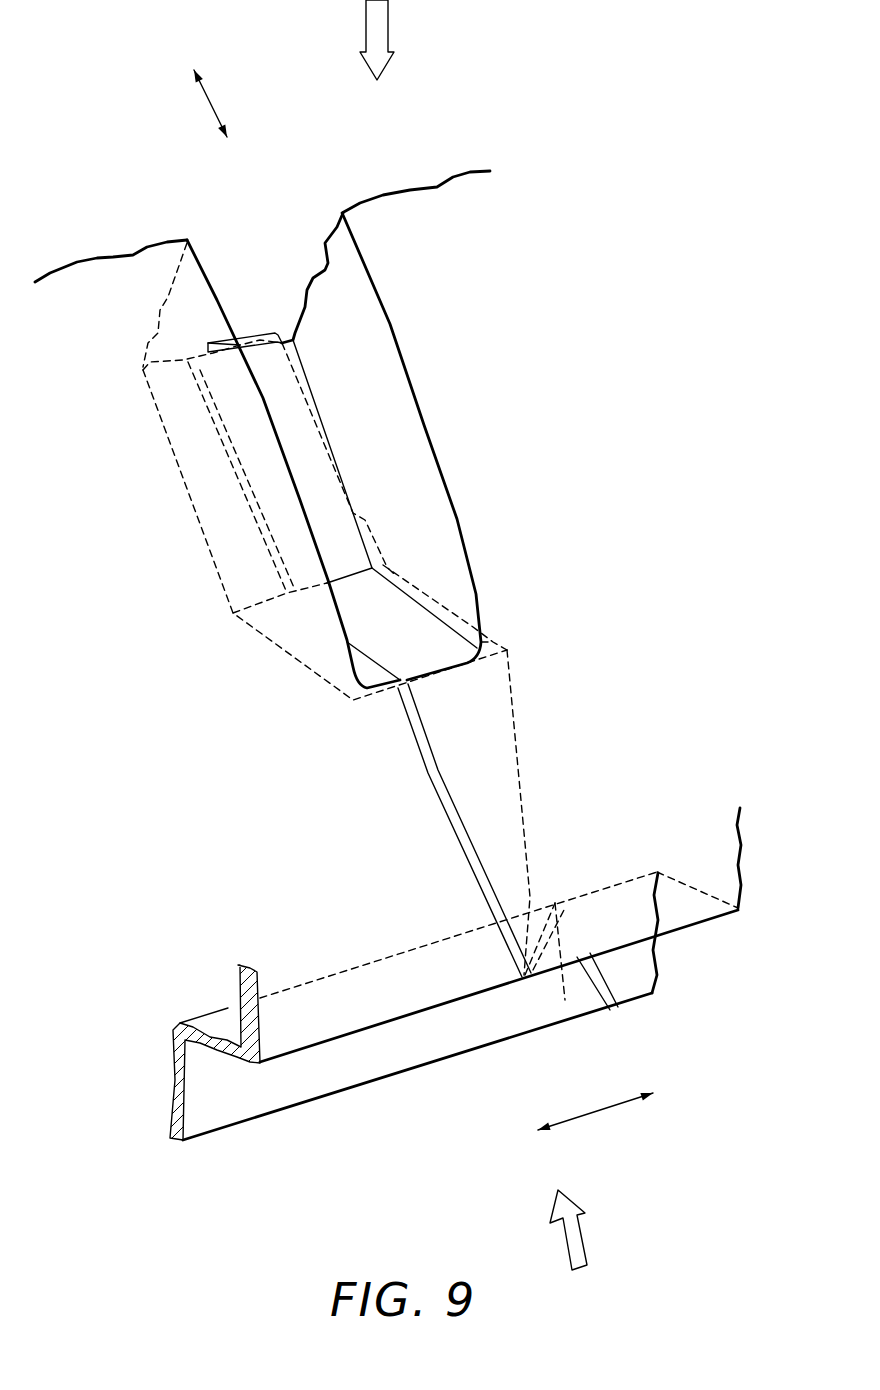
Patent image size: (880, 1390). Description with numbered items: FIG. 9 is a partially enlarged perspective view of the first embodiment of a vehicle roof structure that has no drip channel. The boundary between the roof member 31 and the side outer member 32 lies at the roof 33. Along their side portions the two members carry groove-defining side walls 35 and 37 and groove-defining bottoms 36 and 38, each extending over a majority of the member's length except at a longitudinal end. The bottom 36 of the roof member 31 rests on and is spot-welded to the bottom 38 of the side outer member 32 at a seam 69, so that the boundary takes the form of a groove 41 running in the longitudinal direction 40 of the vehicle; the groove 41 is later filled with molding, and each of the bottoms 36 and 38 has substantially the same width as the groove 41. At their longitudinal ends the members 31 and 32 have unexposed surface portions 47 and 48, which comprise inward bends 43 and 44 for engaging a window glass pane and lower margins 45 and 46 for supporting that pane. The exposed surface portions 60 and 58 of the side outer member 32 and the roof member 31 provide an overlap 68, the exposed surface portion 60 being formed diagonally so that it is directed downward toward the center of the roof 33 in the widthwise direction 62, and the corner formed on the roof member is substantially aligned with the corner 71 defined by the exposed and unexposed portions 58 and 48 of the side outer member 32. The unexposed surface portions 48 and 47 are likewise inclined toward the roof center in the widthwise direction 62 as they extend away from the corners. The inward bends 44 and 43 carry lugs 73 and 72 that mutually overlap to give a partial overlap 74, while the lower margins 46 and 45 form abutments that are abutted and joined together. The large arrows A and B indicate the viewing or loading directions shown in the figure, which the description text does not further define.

The roof member 31 is at (418, 203).
The side outer member 32 is at (110, 274).
The roof 33 is at (582, 339).
The groove-defining side wall 35 is at (333, 275).
The groove-defining bottom 36 is at (272, 352).
The groove-defining side wall 37 is at (168, 323).
The groove-defining bottom 38 is at (250, 340).
The longitudinal direction 40 is at (210, 104).
The groove 41 is at (228, 236).
The inward bend 43 is at (692, 910).
The inward bend 44 is at (232, 1030).
The lower margin 45 is at (647, 965).
The lower margin 46 is at (265, 1092).
The unexposed surface portion 47 is at (780, 940).
The unexposed surface portion 48 is at (307, 1180).
The exposed surface portion 58 is at (377, 887).
The exposed surface portion 60 is at (660, 798).
The widthwise direction 62 is at (595, 1113).
The overlap 68 is at (510, 773).
The seam 69 is at (428, 773).
The corner 71 is at (522, 995).
The lug 72 is at (563, 915).
The lug 73 is at (578, 985).
The partial overlap 74 is at (557, 946).
The direction A is at (388, 26).
The direction B is at (583, 1240).